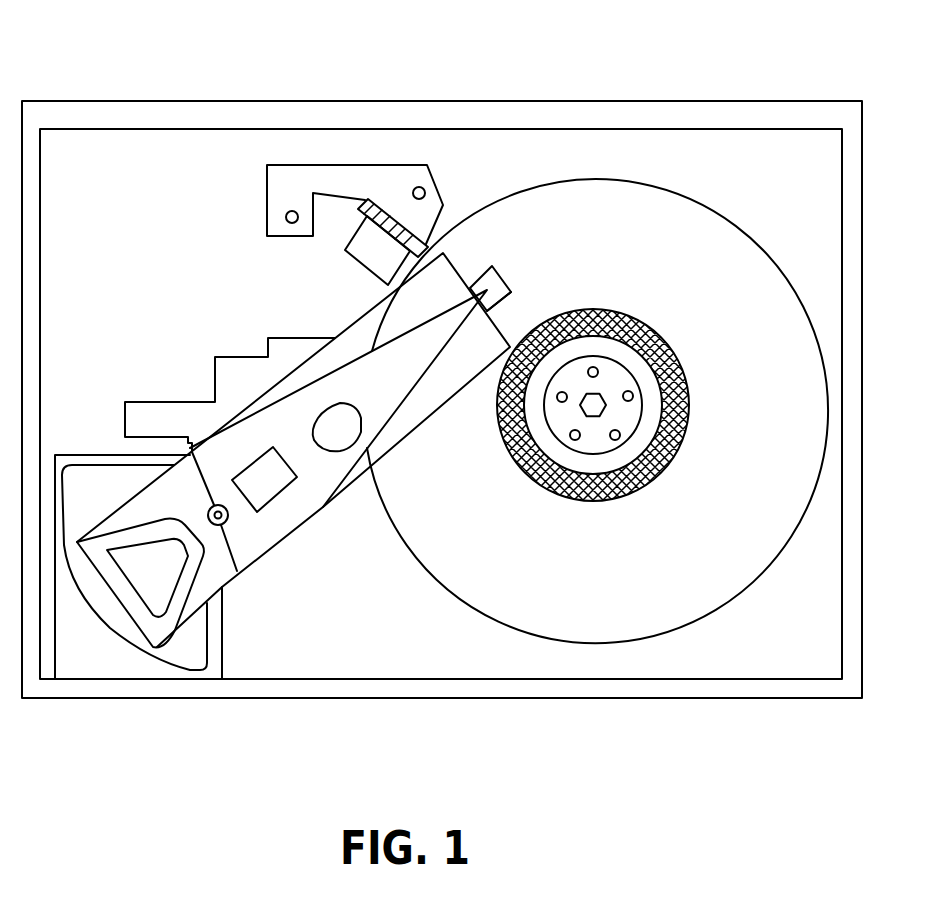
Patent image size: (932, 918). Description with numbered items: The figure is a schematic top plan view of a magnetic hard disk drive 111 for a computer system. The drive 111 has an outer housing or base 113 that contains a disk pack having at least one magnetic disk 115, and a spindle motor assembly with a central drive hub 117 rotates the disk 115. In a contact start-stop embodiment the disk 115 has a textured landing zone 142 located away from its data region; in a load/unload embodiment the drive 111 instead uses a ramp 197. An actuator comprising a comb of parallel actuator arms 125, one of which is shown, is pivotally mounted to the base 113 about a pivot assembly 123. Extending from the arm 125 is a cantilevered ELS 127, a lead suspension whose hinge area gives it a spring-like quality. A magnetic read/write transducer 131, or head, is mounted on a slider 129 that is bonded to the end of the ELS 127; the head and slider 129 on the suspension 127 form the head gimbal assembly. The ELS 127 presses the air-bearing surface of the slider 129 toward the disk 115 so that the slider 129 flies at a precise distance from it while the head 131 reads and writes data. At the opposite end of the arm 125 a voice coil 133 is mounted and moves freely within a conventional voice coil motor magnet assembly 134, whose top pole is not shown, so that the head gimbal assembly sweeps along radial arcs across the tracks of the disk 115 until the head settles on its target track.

The hard disk drive 111 is at (464, 44).
The outer housing or base 113 is at (850, 160).
The magnetic disk 115 is at (708, 205).
The central drive hub 117 is at (623, 413).
The textured landing zone 142 is at (618, 305).
The pivot assembly 123 is at (227, 525).
The actuator arm 125 is at (323, 507).
The ELS (lead suspension) 127 is at (400, 365).
The slider 129 is at (498, 275).
The magnetic read/write transducer 131 is at (512, 292).
The voice coil 133 is at (225, 373).
The voice coil motor magnet assembly 134 is at (112, 607).
The ramp 197 is at (375, 274).